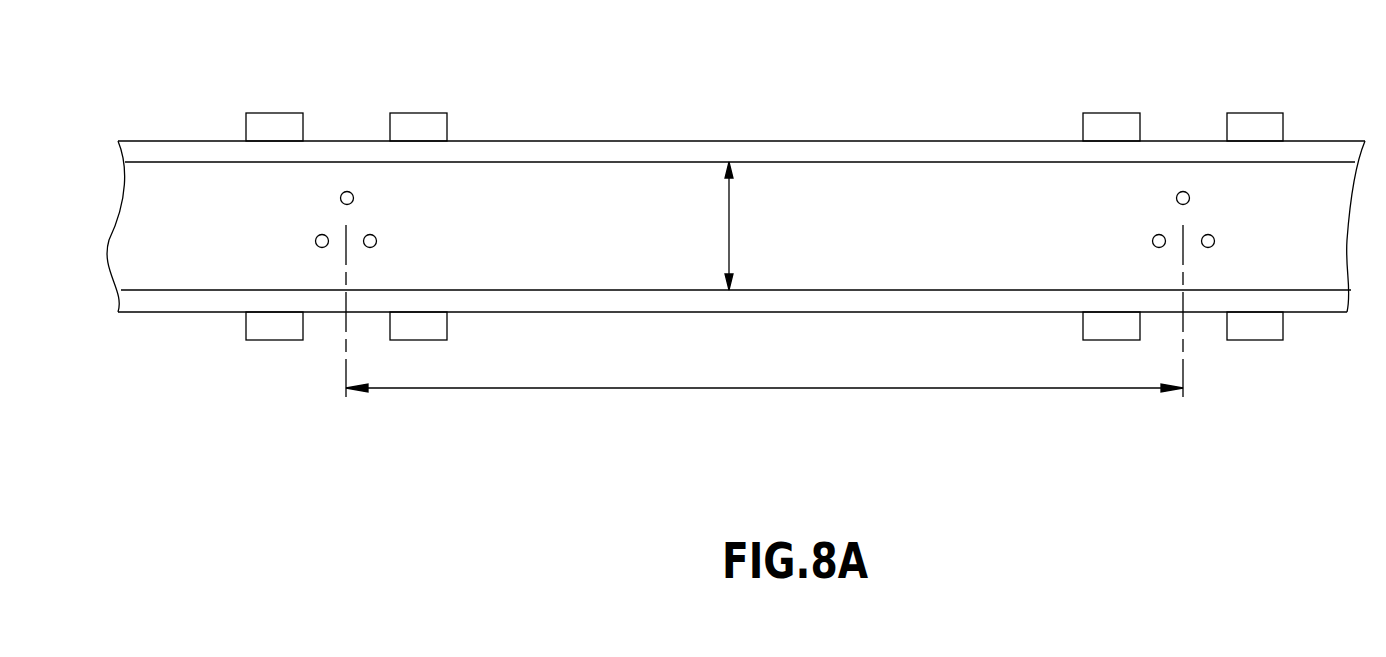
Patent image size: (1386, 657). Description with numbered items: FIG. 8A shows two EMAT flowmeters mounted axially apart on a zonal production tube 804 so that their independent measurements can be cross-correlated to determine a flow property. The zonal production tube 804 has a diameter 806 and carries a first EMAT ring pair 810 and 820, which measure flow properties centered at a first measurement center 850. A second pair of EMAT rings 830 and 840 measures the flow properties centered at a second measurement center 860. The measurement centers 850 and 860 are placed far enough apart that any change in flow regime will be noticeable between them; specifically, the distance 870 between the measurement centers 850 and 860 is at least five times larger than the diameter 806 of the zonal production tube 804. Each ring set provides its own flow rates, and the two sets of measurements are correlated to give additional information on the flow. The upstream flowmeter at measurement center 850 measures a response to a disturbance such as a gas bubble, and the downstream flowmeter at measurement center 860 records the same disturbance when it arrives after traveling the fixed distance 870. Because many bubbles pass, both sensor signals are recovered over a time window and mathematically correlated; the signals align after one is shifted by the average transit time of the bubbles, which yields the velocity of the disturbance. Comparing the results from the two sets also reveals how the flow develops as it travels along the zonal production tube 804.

The zonal production tube 804 is at (200, 149).
The diameter 806 is at (729, 226).
The EMAT ring 810 is at (272, 120).
The EMAT ring 820 is at (416, 120).
The EMAT ring 830 is at (1113, 120).
The EMAT ring 840 is at (1257, 120).
The measurement center 850 is at (345, 372).
The measurement center 860 is at (1185, 372).
The distance 870 is at (765, 388).